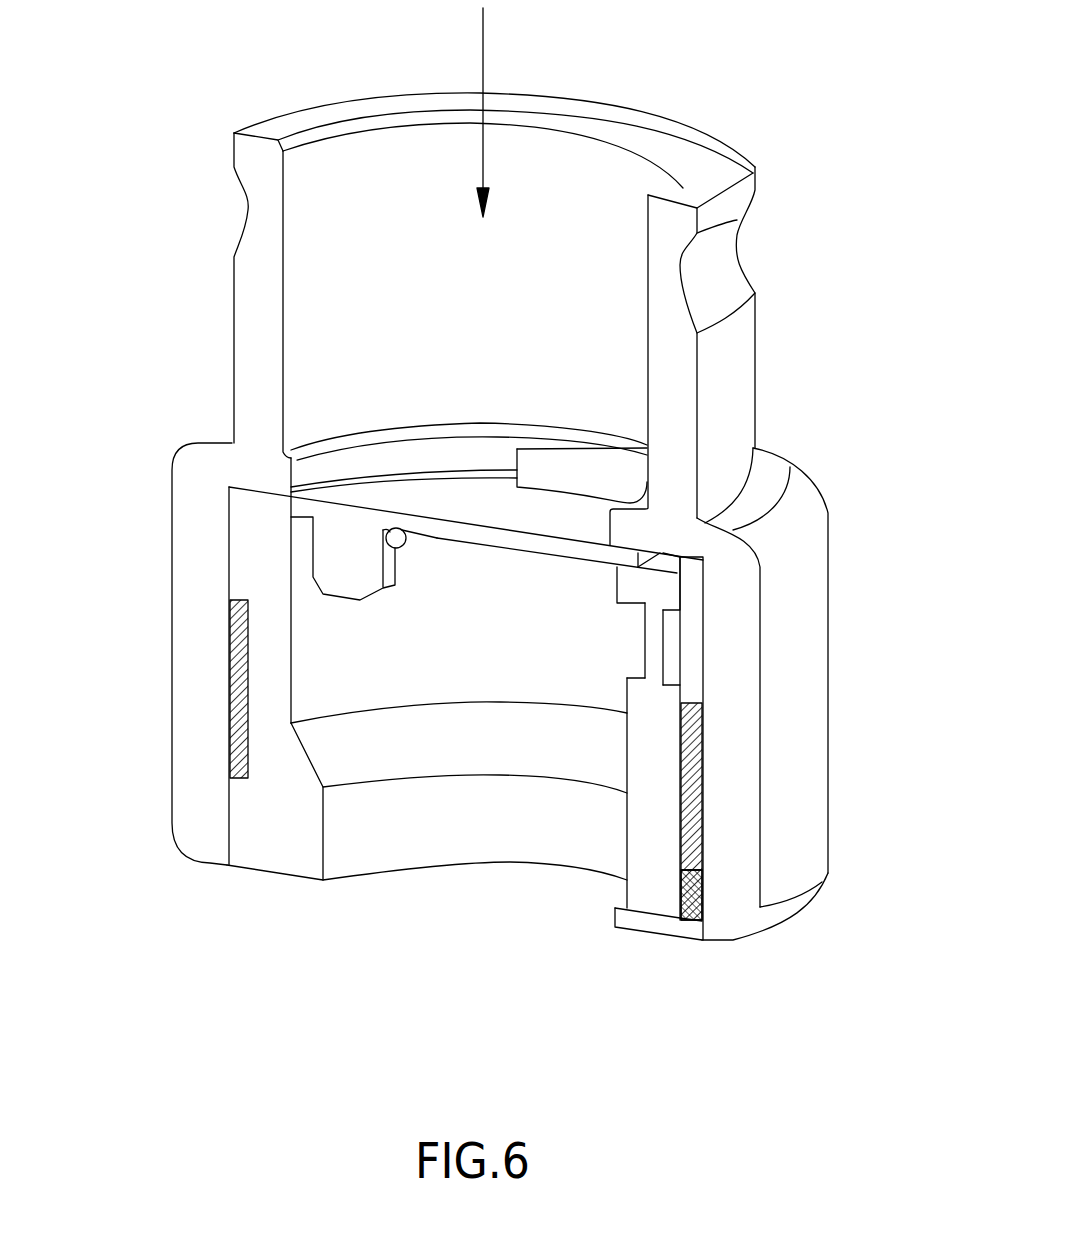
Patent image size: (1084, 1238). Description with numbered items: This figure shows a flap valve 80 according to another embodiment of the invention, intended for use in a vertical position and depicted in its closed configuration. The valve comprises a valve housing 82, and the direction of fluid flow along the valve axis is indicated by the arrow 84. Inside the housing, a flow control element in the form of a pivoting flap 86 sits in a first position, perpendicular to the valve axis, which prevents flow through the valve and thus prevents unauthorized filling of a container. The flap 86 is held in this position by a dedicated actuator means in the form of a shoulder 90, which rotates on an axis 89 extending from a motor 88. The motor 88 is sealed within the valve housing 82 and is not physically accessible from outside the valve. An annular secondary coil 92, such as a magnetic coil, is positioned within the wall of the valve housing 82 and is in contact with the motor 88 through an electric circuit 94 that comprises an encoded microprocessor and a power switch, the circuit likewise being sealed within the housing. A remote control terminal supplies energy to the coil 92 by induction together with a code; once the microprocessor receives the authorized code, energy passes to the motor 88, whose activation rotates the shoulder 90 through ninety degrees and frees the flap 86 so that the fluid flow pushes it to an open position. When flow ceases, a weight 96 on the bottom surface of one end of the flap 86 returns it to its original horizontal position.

The flap valve 80 is at (822, 372).
The valve housing 82 is at (800, 625).
The arrow 84 is at (483, 40).
The pivoting flap 86 is at (473, 503).
The motor 88 is at (647, 843).
The axis 89 is at (657, 636).
The shoulder 90 is at (638, 580).
The annular secondary coil 92 is at (703, 803).
The electric circuit 94 is at (682, 893).
The weight 96 is at (342, 548).